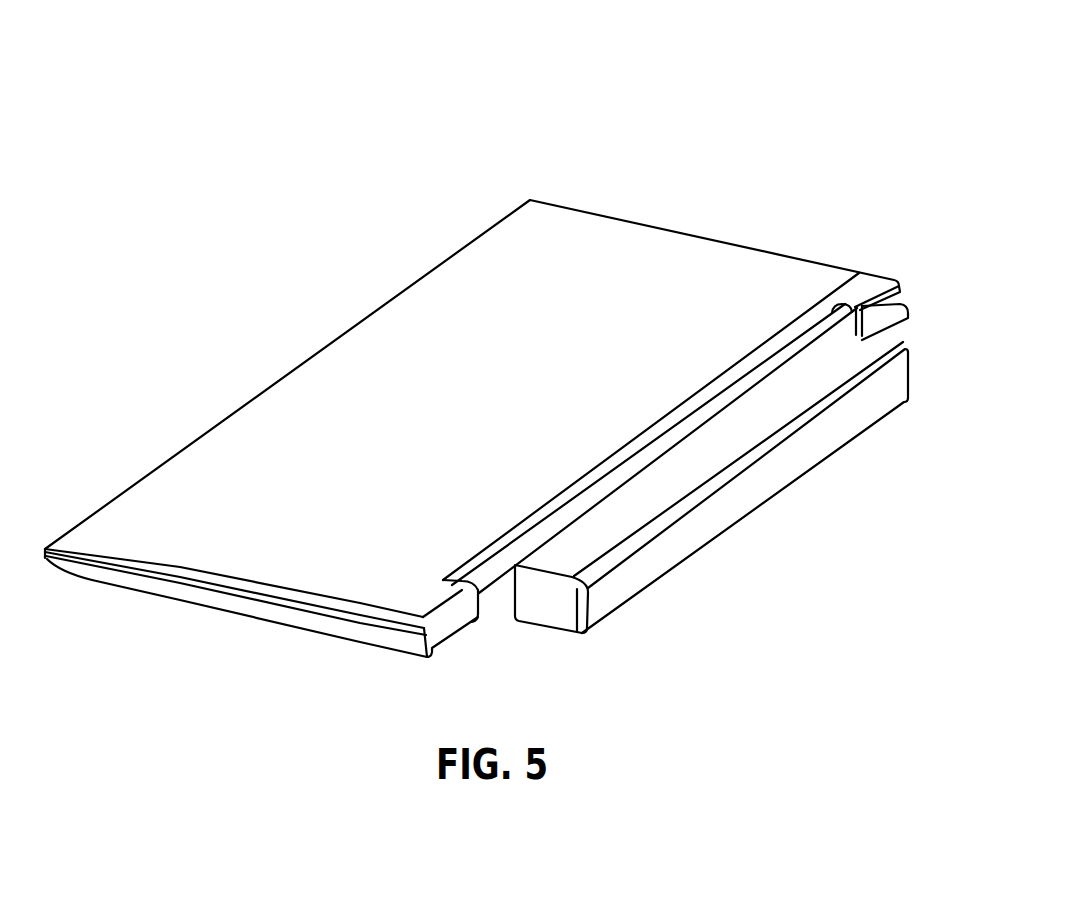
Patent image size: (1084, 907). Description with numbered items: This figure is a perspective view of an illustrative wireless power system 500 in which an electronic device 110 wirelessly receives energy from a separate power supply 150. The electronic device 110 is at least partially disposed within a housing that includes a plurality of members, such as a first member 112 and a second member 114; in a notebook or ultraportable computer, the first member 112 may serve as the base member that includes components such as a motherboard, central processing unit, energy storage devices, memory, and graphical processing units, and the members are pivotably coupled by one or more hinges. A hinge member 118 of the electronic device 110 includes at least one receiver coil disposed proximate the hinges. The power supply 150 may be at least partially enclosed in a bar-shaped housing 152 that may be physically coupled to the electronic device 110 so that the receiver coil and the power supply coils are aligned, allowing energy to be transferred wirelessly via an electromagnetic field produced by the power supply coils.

The wireless power system 500 is at (807, 52).
The electronic device 110 is at (472, 414).
The second member 114 is at (751, 215).
The hinge member 118 is at (843, 313).
The power supply 150 is at (701, 435).
The bar-shaped housing 152 is at (826, 441).
The first member 112 is at (302, 618).